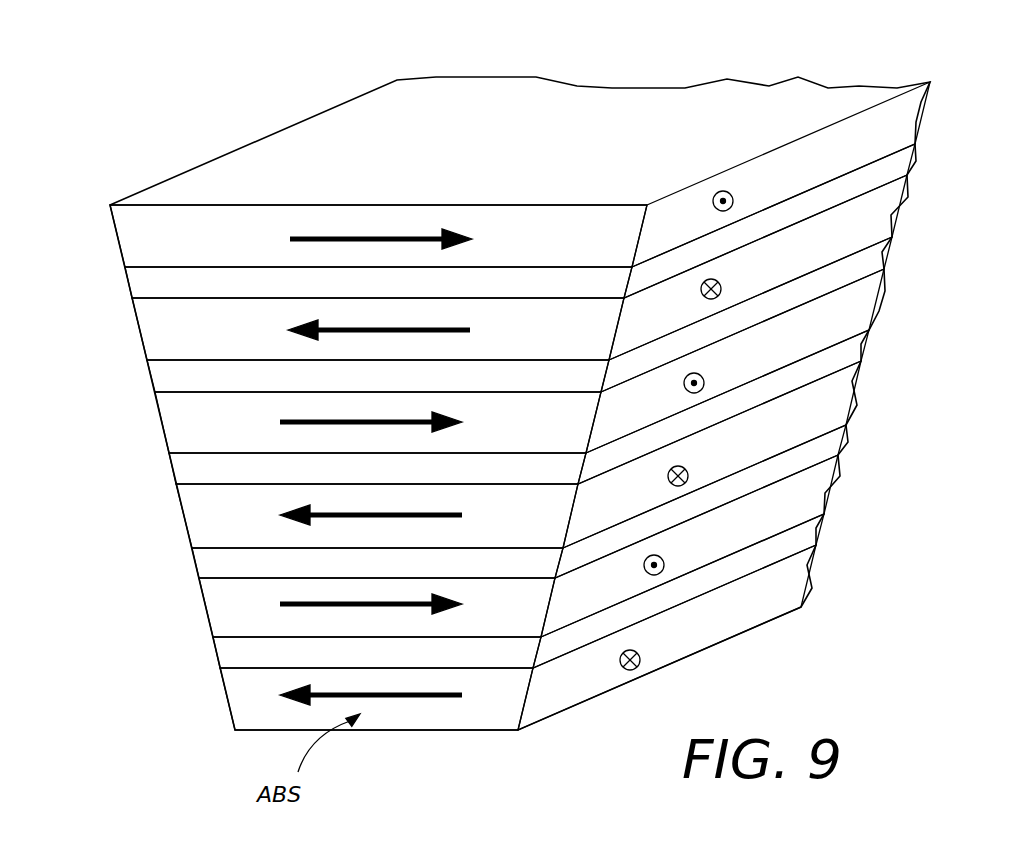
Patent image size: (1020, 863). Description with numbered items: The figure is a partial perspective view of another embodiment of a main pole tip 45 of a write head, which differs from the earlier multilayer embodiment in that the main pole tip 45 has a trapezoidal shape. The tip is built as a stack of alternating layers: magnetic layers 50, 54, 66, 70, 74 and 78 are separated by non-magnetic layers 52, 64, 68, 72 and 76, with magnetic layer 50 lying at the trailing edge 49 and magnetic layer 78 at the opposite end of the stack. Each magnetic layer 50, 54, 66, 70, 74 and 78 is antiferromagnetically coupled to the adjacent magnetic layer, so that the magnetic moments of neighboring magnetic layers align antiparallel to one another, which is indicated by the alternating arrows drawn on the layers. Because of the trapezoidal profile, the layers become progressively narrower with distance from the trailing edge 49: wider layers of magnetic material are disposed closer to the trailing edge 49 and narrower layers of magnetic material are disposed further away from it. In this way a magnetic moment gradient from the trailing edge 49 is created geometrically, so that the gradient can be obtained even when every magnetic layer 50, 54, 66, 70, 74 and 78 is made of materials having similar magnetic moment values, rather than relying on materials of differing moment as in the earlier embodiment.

The main pole tip 45 is at (108, 144).
The trailing edge 49 is at (444, 205).
The magnetic layer 50 is at (128, 227).
The non-magnetic layer 52 is at (130, 280).
The magnetic layer 54 is at (150, 337).
The non-magnetic layer 64 is at (165, 382).
The magnetic layer 66 is at (188, 428).
The non-magnetic layer 68 is at (185, 475).
The magnetic layer 70 is at (210, 522).
The non-magnetic layer 72 is at (215, 568).
The magnetic layer 74 is at (222, 614).
The non-magnetic layer 76 is at (225, 645).
The magnetic layer 78 is at (245, 702).